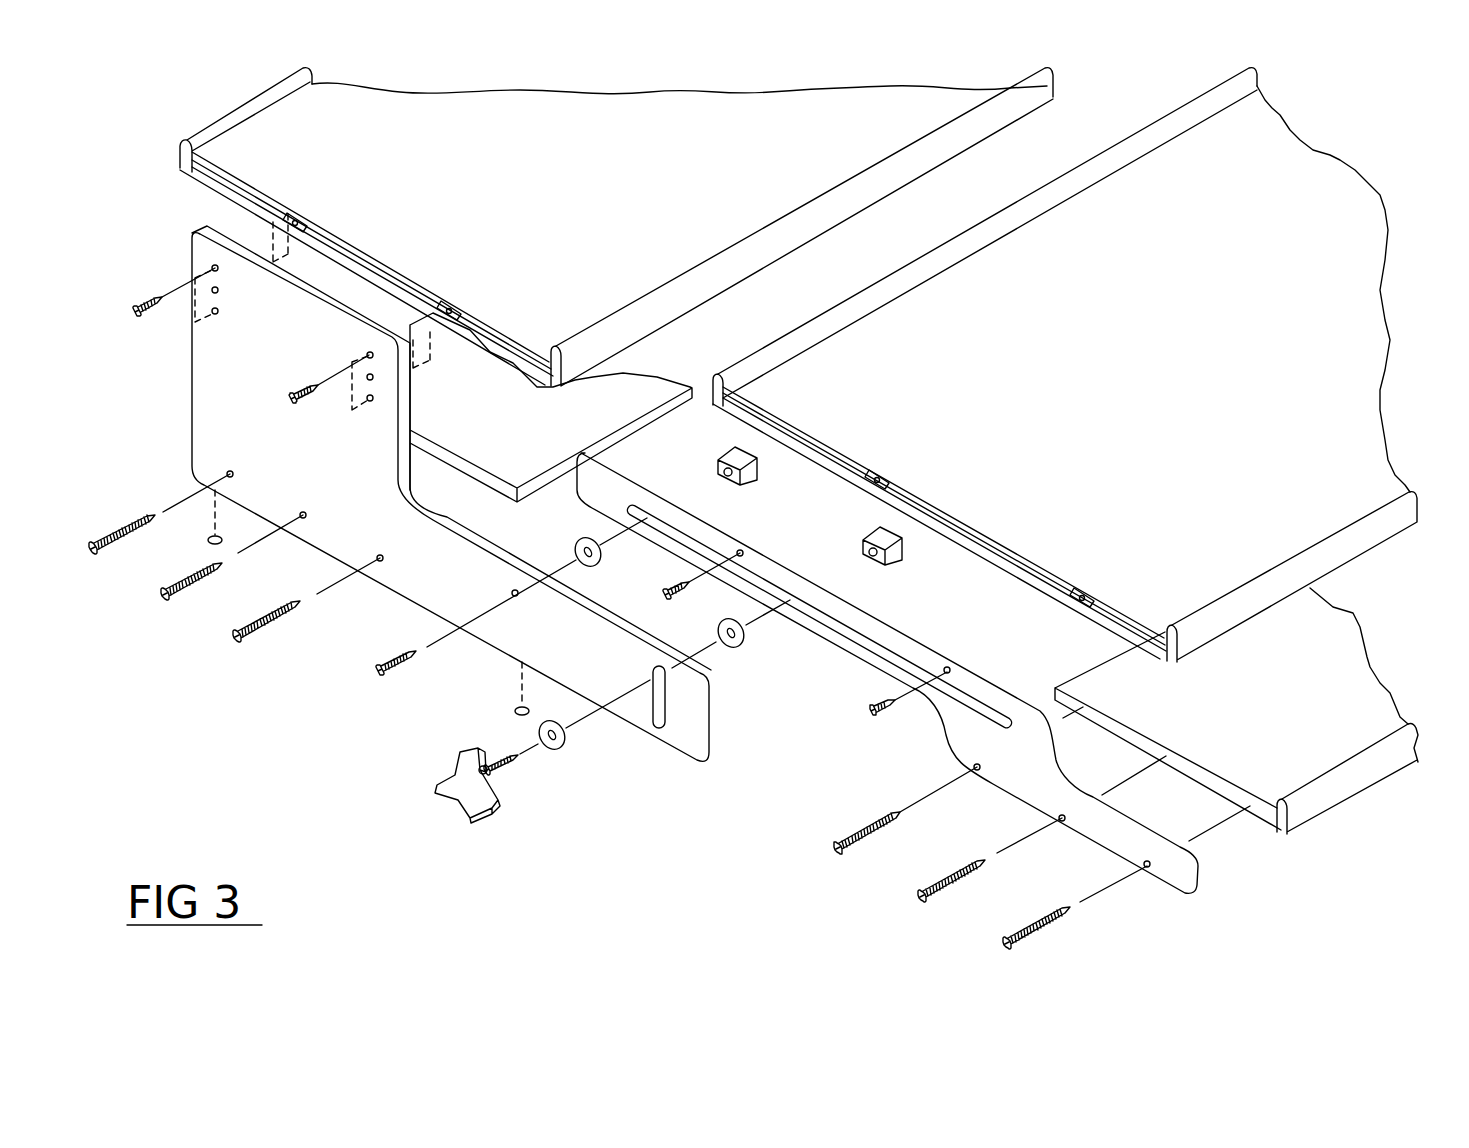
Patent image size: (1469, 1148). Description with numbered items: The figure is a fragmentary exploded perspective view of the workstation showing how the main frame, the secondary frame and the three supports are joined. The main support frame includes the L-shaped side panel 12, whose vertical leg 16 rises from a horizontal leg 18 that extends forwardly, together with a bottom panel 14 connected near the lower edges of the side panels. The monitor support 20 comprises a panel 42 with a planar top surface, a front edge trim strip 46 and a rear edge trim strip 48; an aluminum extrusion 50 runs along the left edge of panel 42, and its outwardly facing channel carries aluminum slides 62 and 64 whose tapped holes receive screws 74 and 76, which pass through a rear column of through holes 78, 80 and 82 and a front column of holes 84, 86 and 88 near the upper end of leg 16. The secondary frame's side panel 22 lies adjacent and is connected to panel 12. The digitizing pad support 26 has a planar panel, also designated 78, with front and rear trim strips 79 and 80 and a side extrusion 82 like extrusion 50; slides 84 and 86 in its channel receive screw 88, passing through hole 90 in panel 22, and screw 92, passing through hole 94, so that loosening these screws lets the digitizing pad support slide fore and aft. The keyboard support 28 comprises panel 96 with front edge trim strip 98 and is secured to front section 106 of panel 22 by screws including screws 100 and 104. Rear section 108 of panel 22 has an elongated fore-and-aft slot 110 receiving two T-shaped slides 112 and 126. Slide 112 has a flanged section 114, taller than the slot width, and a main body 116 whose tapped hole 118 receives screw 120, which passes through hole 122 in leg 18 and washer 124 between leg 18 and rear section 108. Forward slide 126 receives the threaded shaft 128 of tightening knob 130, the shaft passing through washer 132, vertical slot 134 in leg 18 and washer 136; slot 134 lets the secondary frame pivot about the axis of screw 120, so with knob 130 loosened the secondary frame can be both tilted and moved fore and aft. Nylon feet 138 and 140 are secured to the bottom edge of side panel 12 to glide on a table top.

The side panel 12 is at (433, 603).
The bottom panel 14 is at (551, 407).
The vertical leg 16 is at (222, 382).
The horizontal leg 18 is at (554, 640).
The monitor support 20 is at (588, 194).
The side panel 22 is at (970, 738).
The digitizing pad support 26 is at (1153, 364).
The keyboard support 28 is at (1228, 714).
The panel 42 is at (638, 123).
The front edge trim strip 46 is at (848, 178).
The rear edge trim strip 48 is at (232, 105).
The aluminum extrusion 50 is at (383, 253).
The aluminum slide 62 is at (253, 243).
The aluminum slide 64 is at (453, 307).
The screw 74 is at (137, 320).
The screw 76 is at (292, 405).
The through hole (also digitizing pad support panel) 78 is at (1305, 180).
The front edge trim strip 79 is at (1367, 517).
The through hole (also rear edge trim strip) 80 is at (950, 248).
The through hole (also aluminum extrusion) 82 is at (965, 517).
The through hole (also slide) 84 is at (767, 537).
The through hole (also slide) 86 is at (1068, 593).
The through hole (also screw) 88 is at (372, 400).
The hole 90 is at (737, 556).
The screw 92 is at (887, 700).
The hole 94 is at (950, 668).
The panel 96 is at (1320, 648).
The front edge trim strip 98 is at (1313, 797).
The screw 100 is at (860, 835).
The screw 104 is at (923, 907).
The front section 106 is at (1090, 827).
The rear section 108 is at (867, 627).
The elongated slot 110 is at (887, 653).
The T-shaped slide 112 is at (697, 428).
The flanged section 114 is at (747, 460).
The main body 116 is at (717, 462).
The hole 118 is at (731, 476).
The screw 120 is at (377, 673).
The hole 122 is at (515, 592).
The washer 124 is at (583, 540).
The T-shaped slide 126 is at (893, 558).
The threaded shaft 128 is at (507, 773).
The tightening knob 130 is at (433, 792).
The washer 132 is at (560, 757).
The vertical slot 134 is at (663, 703).
The washer 136 is at (742, 648).
The foot 138 is at (210, 543).
The foot 140 is at (513, 712).